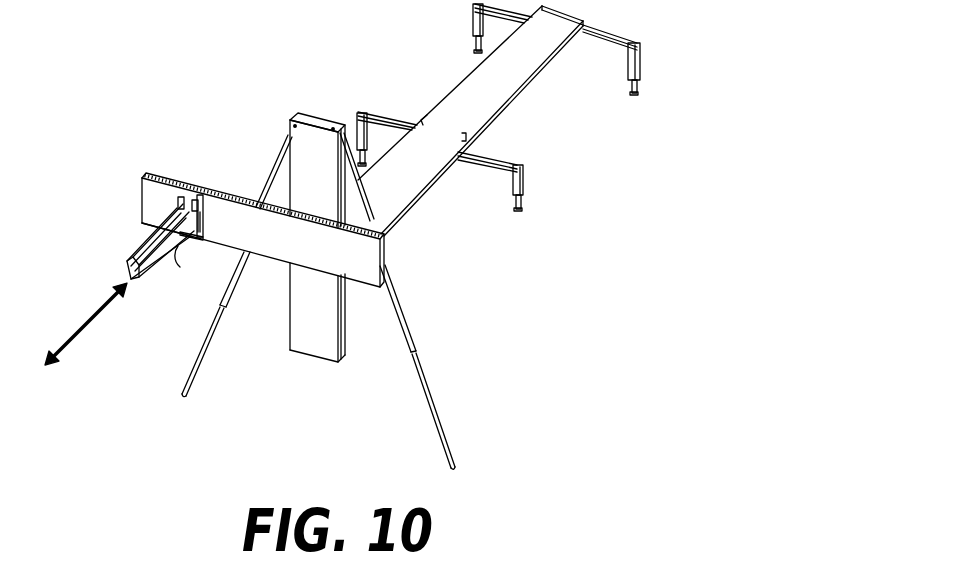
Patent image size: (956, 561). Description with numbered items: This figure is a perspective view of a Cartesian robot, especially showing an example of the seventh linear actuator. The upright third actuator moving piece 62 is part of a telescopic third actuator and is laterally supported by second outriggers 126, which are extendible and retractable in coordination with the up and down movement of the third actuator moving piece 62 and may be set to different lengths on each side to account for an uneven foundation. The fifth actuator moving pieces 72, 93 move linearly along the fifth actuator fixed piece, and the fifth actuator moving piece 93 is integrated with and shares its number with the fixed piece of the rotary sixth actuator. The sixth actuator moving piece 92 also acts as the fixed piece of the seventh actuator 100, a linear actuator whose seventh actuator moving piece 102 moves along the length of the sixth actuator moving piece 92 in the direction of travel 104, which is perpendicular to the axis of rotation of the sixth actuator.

The third actuator moving piece 62 is at (313, 150).
The fifth actuator moving piece 72 is at (362, 260).
The sixth actuator moving piece 92 is at (143, 278).
The fifth actuator moving piece 93 is at (186, 197).
The seventh actuator 100 is at (190, 242).
The seventh actuator moving piece 102 is at (168, 222).
The direction of travel 104 is at (73, 323).
The second outriggers 126 is at (202, 365).